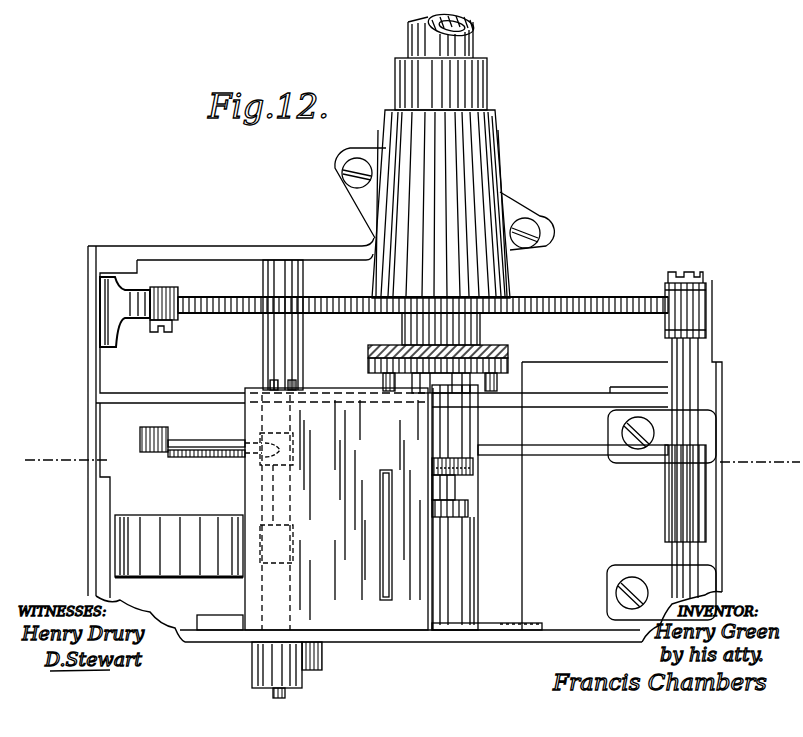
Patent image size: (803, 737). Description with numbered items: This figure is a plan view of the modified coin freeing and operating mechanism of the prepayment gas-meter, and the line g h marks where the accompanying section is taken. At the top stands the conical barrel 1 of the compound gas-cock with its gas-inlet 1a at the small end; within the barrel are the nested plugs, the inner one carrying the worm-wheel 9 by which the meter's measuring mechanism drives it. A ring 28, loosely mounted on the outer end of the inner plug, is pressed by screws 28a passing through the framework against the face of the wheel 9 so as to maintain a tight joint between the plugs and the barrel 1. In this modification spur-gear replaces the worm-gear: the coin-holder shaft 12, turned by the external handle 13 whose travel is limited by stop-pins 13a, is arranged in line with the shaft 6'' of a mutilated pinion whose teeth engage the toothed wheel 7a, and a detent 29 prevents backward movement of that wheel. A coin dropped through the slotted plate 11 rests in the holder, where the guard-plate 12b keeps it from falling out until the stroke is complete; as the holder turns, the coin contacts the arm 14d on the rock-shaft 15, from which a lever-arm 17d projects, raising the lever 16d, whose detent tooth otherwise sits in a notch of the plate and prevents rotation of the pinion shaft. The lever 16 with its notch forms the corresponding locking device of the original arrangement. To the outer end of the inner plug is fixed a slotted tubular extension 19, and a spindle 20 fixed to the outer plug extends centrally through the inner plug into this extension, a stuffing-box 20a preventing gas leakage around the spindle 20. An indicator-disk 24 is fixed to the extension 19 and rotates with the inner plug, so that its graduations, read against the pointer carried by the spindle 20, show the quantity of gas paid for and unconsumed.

The barrel 1 is at (445, 178).
The gas-inlet 1a is at (441, 34).
The detent 29 is at (200, 300).
The toothed wheel 7a is at (545, 299).
The shaft of mutilated pinion 6'' is at (283, 325).
The worm-wheel 9 is at (509, 351).
The ring 28 is at (370, 367).
The screws 28a is at (387, 392).
The slotted plate 11 is at (339, 509).
The rock-shaft 15 is at (280, 492).
The stop-pins 13a is at (322, 655).
The arm 14d is at (262, 545).
The tubular extension 19 is at (455, 507).
The stuffing-box 20a is at (473, 466).
The spindle 20 is at (456, 490).
The indicator-disk 24 is at (497, 622).
The lever-arm 17d is at (178, 456).
The guard-plate 12b is at (179, 546).
The lever 16d is at (559, 456).
The lever 16 is at (622, 300).
The shaft 12 is at (302, 688).
The handle 13 is at (286, 694).
The section line g h g is at (67, 445).
The section line g h is at (760, 445).